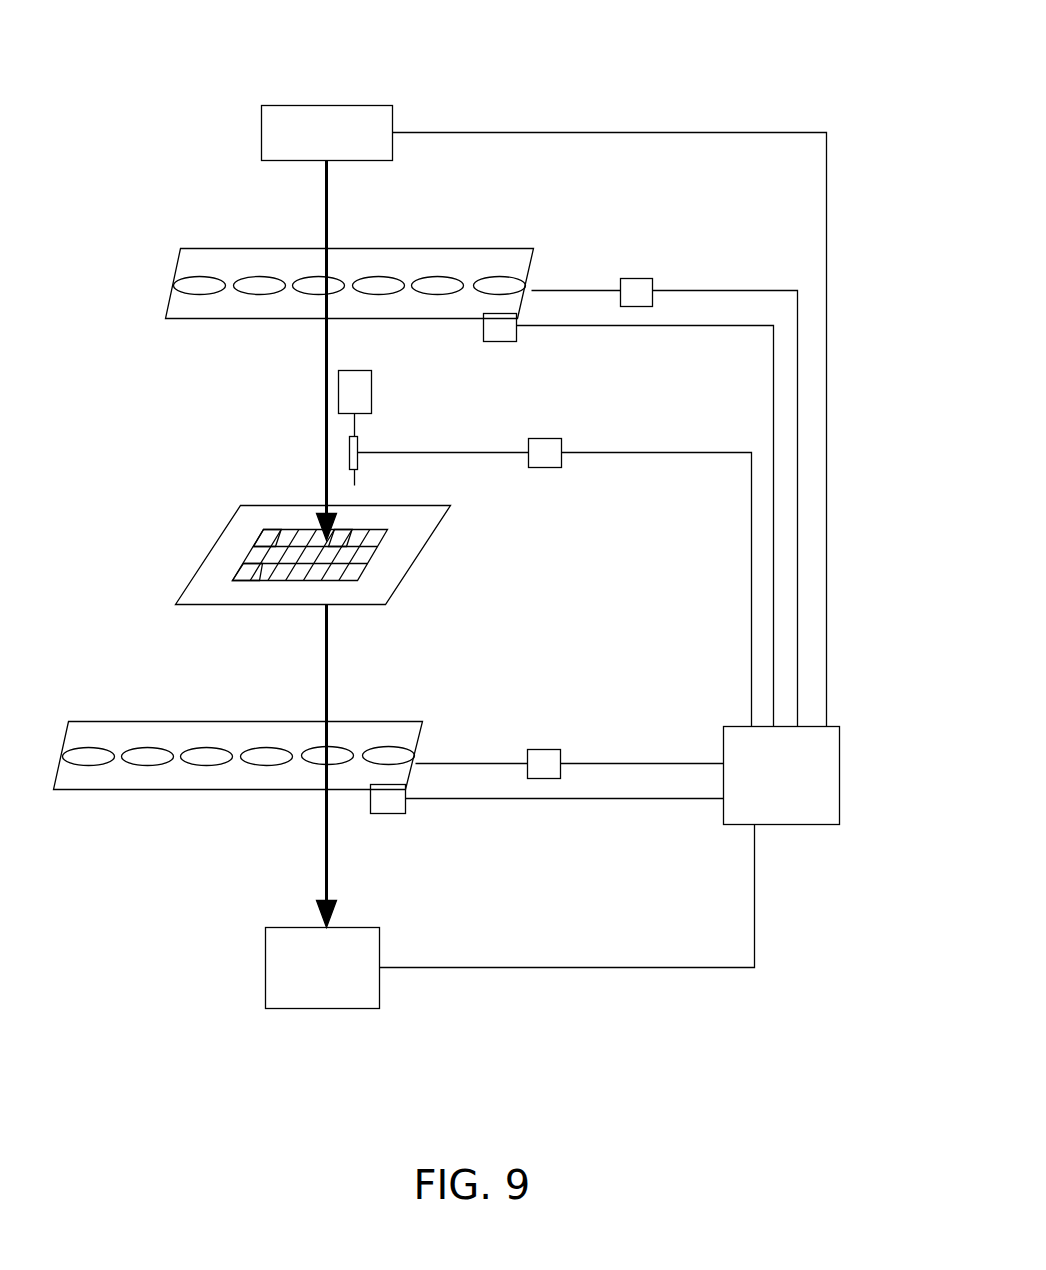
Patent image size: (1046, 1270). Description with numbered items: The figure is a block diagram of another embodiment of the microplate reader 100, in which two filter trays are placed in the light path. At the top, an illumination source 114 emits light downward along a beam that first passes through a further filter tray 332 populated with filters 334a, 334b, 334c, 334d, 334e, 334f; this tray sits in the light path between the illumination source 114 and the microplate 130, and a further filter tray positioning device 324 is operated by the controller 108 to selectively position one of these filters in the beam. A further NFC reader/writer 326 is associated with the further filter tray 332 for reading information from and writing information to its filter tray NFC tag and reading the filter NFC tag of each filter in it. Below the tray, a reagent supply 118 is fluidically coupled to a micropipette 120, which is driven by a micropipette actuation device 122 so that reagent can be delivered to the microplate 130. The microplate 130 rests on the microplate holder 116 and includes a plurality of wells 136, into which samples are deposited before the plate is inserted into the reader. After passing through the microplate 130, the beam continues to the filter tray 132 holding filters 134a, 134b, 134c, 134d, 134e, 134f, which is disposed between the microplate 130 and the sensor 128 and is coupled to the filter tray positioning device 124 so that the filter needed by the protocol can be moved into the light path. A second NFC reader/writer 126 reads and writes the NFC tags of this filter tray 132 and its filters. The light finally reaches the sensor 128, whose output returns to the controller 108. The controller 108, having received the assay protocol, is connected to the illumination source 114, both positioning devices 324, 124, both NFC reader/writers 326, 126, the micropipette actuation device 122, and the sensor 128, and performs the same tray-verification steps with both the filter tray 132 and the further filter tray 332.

The microplate reader 100 is at (805, 78).
The controller 108 is at (840, 748).
The illumination source 114 is at (264, 105).
The microplate holder 116 is at (430, 538).
The reagent supply 118 is at (372, 392).
The micropipette 120 is at (358, 450).
The micropipette actuation device 122 is at (543, 466).
The filter tray positioning device 124 is at (540, 752).
The second NFC reader/writer 126 is at (390, 810).
The sensor 128 is at (265, 960).
The microplate 130 is at (362, 570).
The filter tray 132 is at (127, 789).
The filter 134a is at (88, 756).
The filter 134b is at (148, 755).
The filter 134c is at (207, 752).
The filter 134d is at (266, 752).
The filter 134e is at (330, 752).
The filter 134f is at (392, 750).
The well 136 is at (268, 540).
The further filter tray positioning device 324 is at (642, 280).
The further NFC reader/writer 326 is at (495, 333).
The further filter tray 332 is at (222, 318).
The filter 334a is at (192, 284).
The filter 334b is at (255, 284).
The filter 334c is at (315, 284).
The filter 334d is at (388, 284).
The filter 334e is at (433, 280).
The filter 334f is at (497, 280).